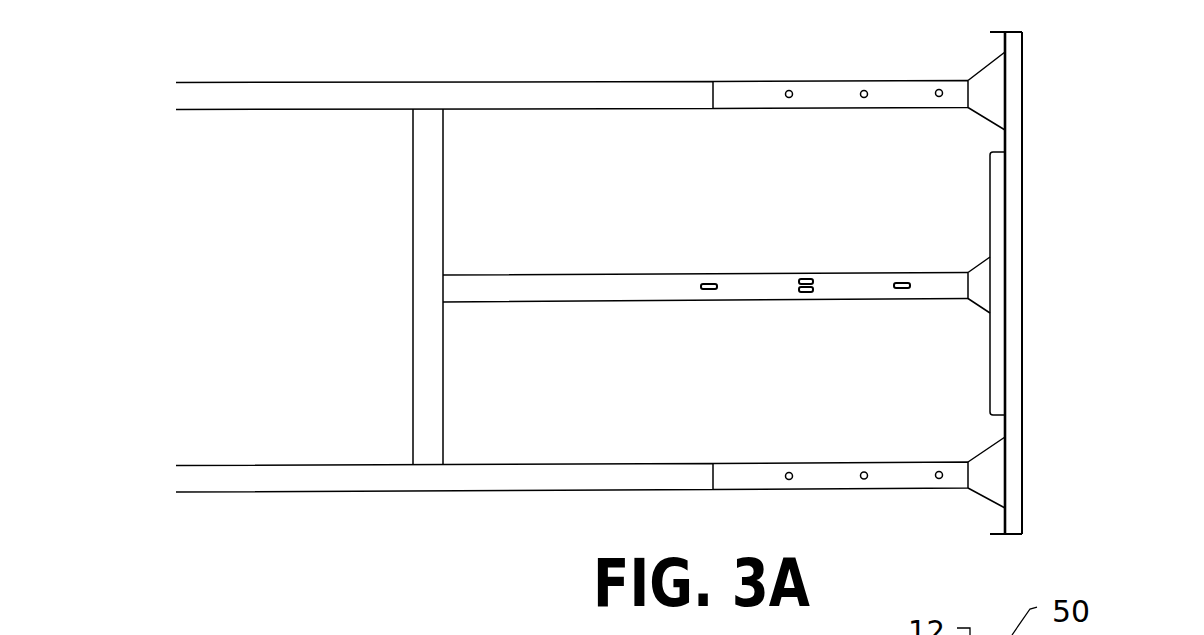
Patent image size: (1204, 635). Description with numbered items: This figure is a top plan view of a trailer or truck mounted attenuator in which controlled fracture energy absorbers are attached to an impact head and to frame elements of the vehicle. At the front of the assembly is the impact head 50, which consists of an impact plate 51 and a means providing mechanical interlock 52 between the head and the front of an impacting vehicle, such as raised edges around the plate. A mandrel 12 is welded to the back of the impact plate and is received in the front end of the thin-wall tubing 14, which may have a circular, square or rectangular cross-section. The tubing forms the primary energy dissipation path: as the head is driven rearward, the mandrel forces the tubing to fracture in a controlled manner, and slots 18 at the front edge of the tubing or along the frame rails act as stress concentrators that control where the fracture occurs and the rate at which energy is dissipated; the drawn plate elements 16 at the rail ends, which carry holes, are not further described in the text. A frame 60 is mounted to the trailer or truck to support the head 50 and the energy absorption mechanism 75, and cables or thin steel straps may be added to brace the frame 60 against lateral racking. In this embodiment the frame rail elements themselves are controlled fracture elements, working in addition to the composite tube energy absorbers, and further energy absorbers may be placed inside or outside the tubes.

The mandrel 12 is at (980, 307).
The thin-wall tubing 14 is at (627, 272).
The rail end plate with holes 16 is at (862, 98).
The slots 18 is at (710, 282).
The impact head 50 is at (1058, 257).
The impact plate 51 is at (1002, 200).
The mechanical interlock 52 is at (1022, 120).
The frame 60 is at (368, 465).
The energy absorption mechanism 75 is at (505, 465).